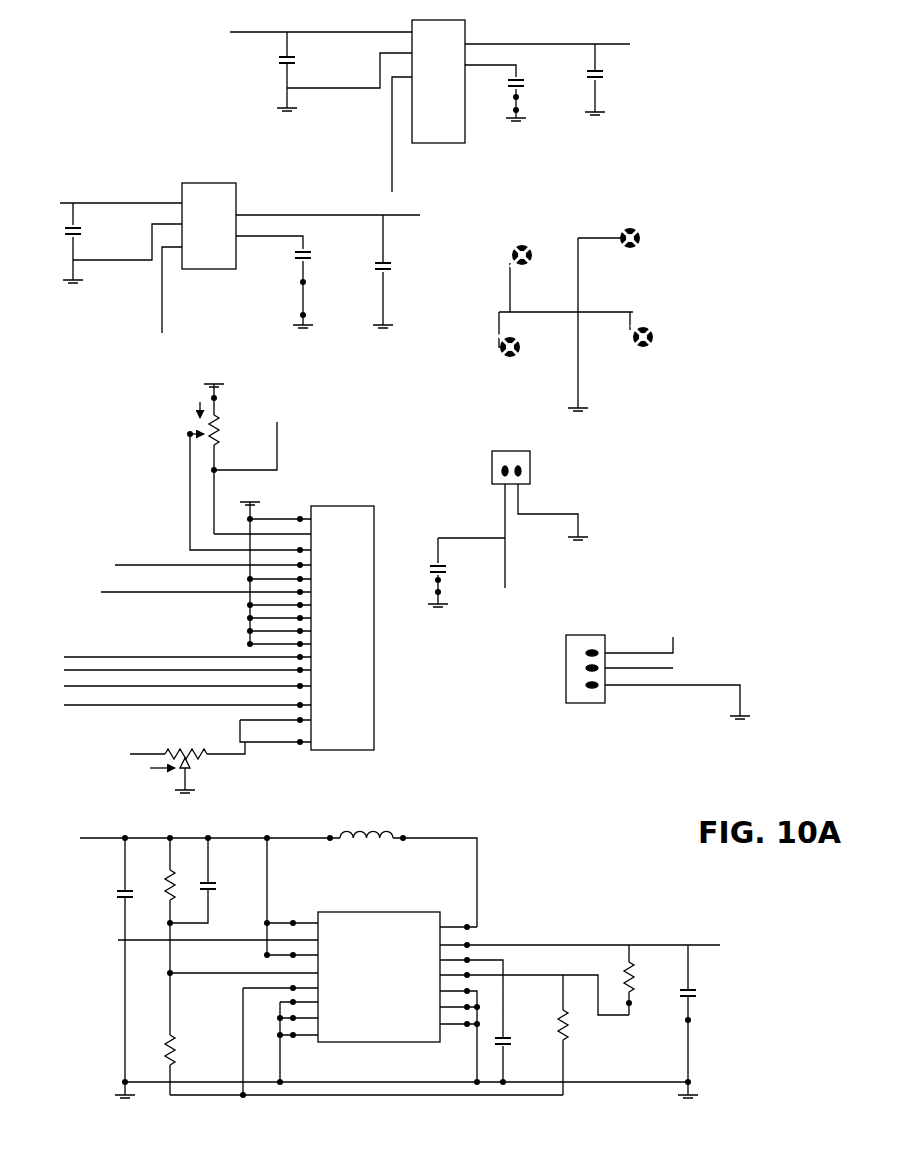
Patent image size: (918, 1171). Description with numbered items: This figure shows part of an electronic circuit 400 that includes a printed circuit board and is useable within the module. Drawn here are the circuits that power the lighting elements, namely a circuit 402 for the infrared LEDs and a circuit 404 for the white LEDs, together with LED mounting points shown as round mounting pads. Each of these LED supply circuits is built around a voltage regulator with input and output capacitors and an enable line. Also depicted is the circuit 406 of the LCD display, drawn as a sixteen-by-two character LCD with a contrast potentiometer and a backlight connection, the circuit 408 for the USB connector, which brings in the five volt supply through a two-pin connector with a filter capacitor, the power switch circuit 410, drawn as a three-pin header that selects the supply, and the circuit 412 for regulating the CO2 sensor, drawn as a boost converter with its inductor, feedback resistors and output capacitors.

The electronic circuit 400 is at (745, 158).
The IR LED power circuit 402 is at (236, 94).
The white LED power circuit 404 is at (166, 180).
The LCD display circuit 406 is at (161, 483).
The USB connector circuit 408 is at (626, 492).
The power switch circuit 410 is at (766, 622).
The CO2 sensor regulating circuit 412 is at (564, 878).